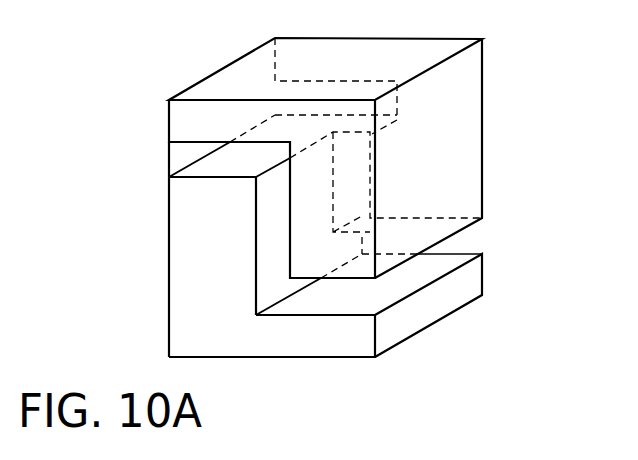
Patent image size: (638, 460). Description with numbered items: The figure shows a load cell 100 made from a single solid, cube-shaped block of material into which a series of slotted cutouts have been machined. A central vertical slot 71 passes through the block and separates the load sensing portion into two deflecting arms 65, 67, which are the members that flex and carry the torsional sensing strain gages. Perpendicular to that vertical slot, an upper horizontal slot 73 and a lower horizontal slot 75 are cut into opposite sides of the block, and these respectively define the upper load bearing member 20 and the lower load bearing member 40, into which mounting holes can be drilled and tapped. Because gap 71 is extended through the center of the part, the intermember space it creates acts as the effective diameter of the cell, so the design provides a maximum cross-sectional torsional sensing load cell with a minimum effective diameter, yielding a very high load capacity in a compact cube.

The load cell 100 is at (532, 57).
The upper load bearing member 20 is at (168, 130).
The lower load bearing member 40 is at (483, 268).
The deflecting arm 67 is at (168, 255).
The central vertical slot 71 is at (264, 236).
The upper horizontal slot 73 is at (158, 160).
The lower horizontal slot 75 is at (494, 235).
The deflecting arm 65 is at (355, 268).